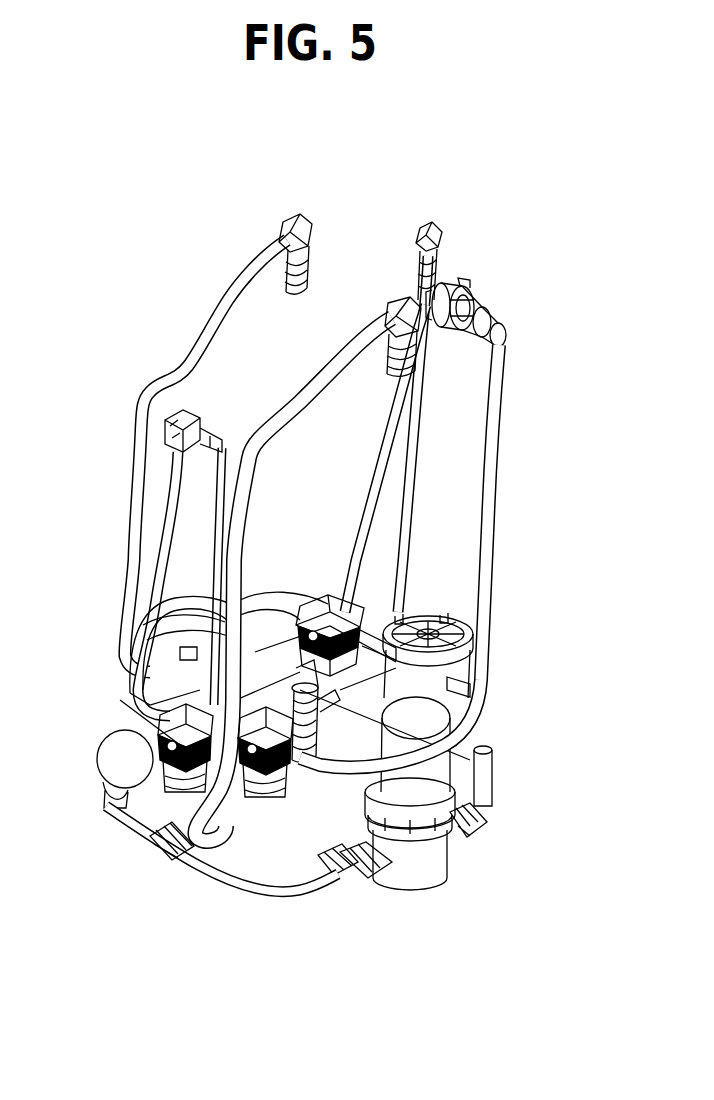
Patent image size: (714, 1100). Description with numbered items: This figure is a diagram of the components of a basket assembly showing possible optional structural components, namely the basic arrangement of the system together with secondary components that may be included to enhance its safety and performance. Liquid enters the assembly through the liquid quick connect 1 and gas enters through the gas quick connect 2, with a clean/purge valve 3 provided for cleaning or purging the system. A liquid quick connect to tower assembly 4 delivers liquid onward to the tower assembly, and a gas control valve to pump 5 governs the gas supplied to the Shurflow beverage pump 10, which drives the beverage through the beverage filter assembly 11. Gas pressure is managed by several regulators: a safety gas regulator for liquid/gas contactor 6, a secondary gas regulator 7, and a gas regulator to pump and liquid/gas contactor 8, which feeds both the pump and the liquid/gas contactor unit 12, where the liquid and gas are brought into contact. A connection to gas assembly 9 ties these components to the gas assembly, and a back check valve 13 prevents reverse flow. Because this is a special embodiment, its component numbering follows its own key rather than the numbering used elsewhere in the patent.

The liquid quick connect 1 is at (283, 222).
The gas quick connect 2 is at (404, 334).
The clean/purge valve 3 is at (208, 409).
The liquid quick connect to tower assembly 4 is at (430, 243).
The gas control valve to pump 5 is at (475, 294).
The safety gas regulator for liquid/gas contactor 6 is at (327, 608).
The secondary gas regulator 7 is at (167, 802).
The gas regulator to pump and liquid/gas contactor 8 is at (260, 807).
The connection to gas assembly 9 is at (315, 759).
The Shurflow beverage pump 10 is at (473, 650).
The beverage filter assembly 11 is at (422, 846).
The liquid/gas contactor unit 12 is at (101, 734).
The back check valve 13 is at (190, 860).